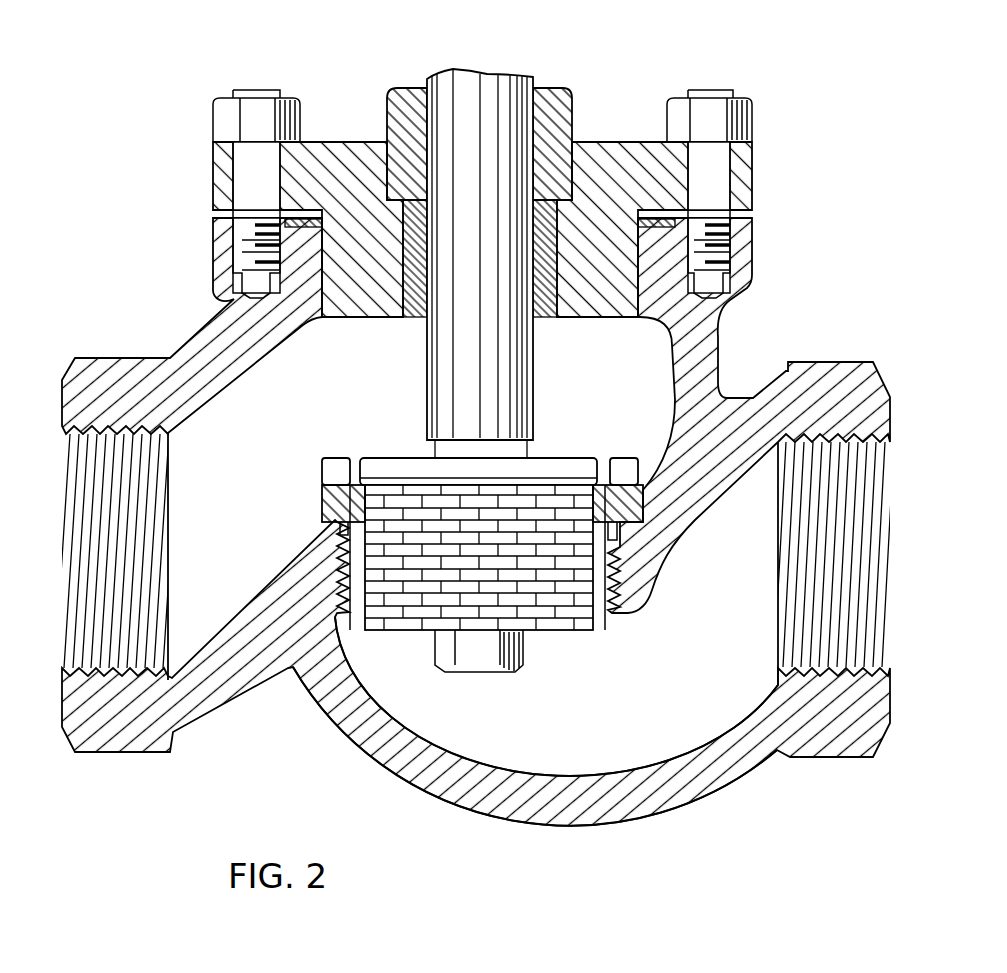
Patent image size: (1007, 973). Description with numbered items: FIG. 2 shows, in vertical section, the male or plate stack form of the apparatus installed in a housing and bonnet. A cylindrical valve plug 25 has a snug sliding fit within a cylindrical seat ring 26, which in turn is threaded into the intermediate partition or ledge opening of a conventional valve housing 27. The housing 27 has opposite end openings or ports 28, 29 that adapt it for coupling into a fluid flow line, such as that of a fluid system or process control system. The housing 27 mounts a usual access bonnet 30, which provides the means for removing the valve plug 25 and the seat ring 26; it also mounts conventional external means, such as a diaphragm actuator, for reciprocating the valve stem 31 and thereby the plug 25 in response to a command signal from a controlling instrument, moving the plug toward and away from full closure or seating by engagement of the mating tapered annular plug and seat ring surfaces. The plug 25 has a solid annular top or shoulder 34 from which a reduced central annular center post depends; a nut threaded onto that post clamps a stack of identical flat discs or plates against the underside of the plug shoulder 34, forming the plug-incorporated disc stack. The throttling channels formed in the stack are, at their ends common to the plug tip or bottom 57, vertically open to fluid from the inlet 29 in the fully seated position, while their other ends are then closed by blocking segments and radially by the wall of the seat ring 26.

The valve plug 25 is at (545, 458).
The seat ring 26 is at (328, 497).
The valve housing 27 is at (372, 745).
The port 28 is at (168, 456).
The port 29 is at (878, 491).
The access bonnet 30 is at (349, 142).
The valve stem 31 is at (492, 80).
The plug shoulder 34 is at (400, 470).
The plug tip 57 is at (581, 650).